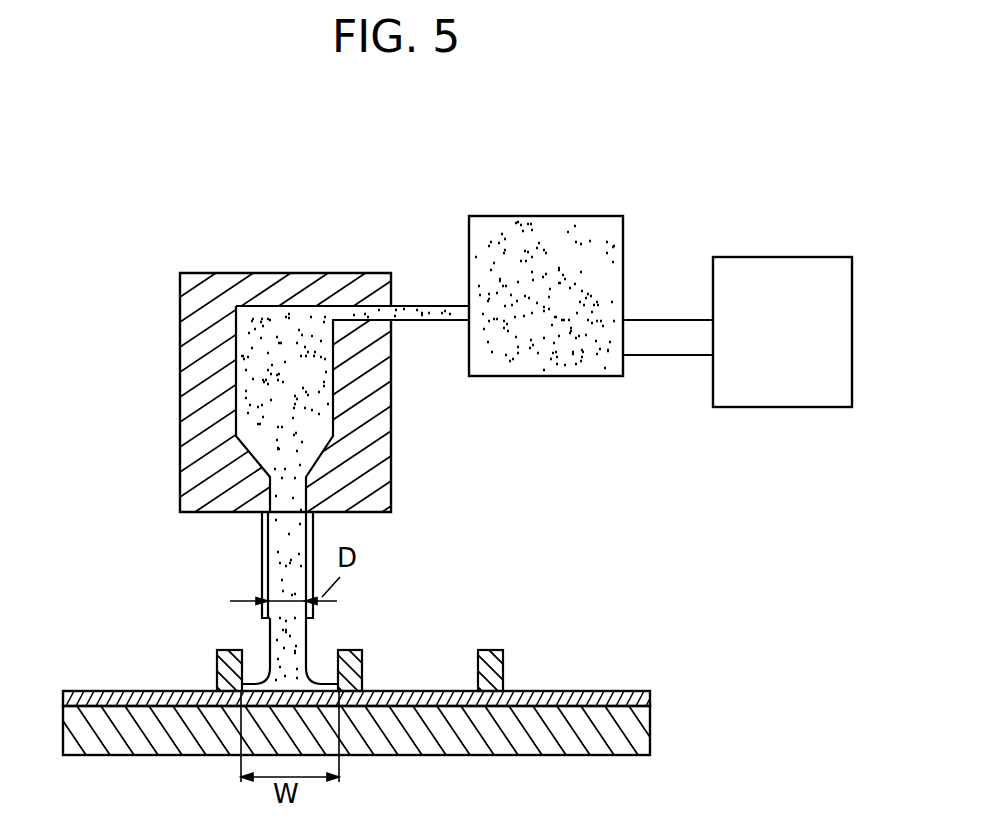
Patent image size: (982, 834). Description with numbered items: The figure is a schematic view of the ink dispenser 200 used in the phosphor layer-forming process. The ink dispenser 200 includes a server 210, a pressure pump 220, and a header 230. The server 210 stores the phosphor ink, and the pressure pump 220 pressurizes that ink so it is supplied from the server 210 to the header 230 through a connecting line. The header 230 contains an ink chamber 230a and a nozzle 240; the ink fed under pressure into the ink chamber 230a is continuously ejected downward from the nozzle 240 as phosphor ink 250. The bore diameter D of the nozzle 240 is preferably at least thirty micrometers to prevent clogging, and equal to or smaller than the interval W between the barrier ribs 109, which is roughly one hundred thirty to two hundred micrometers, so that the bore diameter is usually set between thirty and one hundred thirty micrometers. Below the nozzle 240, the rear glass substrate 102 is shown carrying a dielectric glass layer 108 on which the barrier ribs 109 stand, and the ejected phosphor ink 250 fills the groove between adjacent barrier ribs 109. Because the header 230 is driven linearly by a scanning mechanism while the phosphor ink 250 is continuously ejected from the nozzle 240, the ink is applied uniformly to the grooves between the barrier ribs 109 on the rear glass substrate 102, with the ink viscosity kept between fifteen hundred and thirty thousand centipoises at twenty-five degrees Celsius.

The ink dispenser 200 is at (393, 246).
The header 230 is at (393, 485).
The ink chamber 230a is at (250, 382).
The nozzle 240 is at (260, 577).
The phosphor ink 250 is at (305, 655).
The pressure pump 220 is at (555, 376).
The server 210 is at (785, 407).
The barrier ribs 109 is at (215, 660).
The dielectric glass layer 108 is at (650, 698).
The rear glass substrate 102 is at (645, 725).